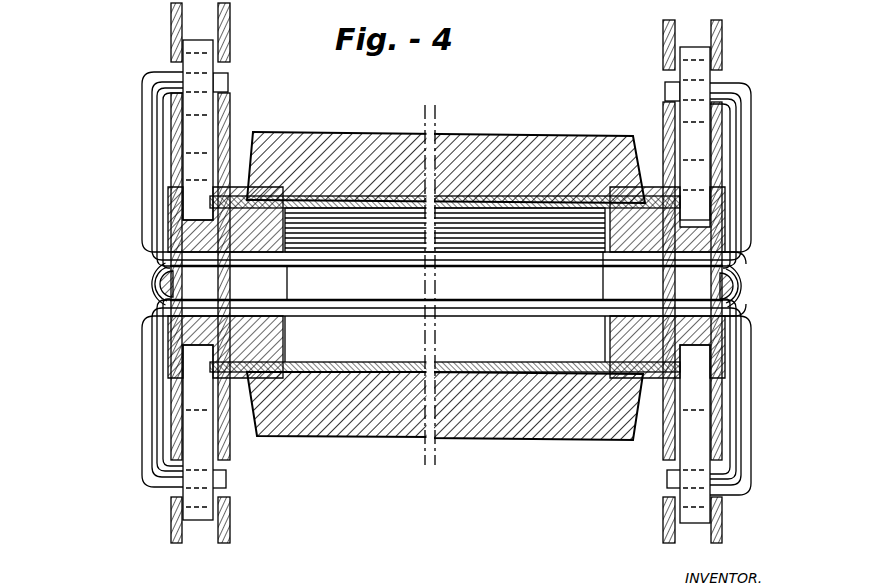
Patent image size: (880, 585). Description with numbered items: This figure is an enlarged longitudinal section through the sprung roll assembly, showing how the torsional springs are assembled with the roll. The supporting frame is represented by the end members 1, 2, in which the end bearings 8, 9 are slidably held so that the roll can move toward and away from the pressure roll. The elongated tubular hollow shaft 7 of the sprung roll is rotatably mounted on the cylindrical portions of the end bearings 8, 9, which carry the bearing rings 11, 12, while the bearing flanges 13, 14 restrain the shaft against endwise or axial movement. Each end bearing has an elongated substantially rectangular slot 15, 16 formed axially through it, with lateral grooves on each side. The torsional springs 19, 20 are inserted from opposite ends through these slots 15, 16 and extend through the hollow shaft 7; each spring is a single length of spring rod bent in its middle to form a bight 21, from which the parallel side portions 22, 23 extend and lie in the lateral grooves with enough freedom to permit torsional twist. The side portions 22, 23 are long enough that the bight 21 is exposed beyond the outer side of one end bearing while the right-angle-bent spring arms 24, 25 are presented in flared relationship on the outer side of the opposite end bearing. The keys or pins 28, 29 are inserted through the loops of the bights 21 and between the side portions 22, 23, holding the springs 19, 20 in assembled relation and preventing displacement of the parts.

The end member 1 is at (171, 31).
The end member 2 is at (722, 60).
The elongated tubular hollow shaft 7 is at (352, 200).
The end bearing 8 is at (166, 240).
The end bearing 9 is at (707, 248).
The bearing ring 11 is at (274, 434).
The bearing ring 12 is at (590, 433).
The bearing flange 13 is at (202, 363).
The bearing flange 14 is at (697, 368).
The elongated rectangular slot 15 is at (190, 282).
The elongated rectangular slot 16 is at (692, 287).
The torsional spring 19 is at (147, 403).
The torsional spring 20 is at (738, 428).
The bight 21 is at (152, 322).
The side portion 22 is at (334, 265).
The side portion 23 is at (478, 312).
The spring arm 24 is at (150, 132).
The spring arm 25 is at (148, 450).
The key or pin 28 is at (158, 279).
The key or pin 29 is at (734, 288).